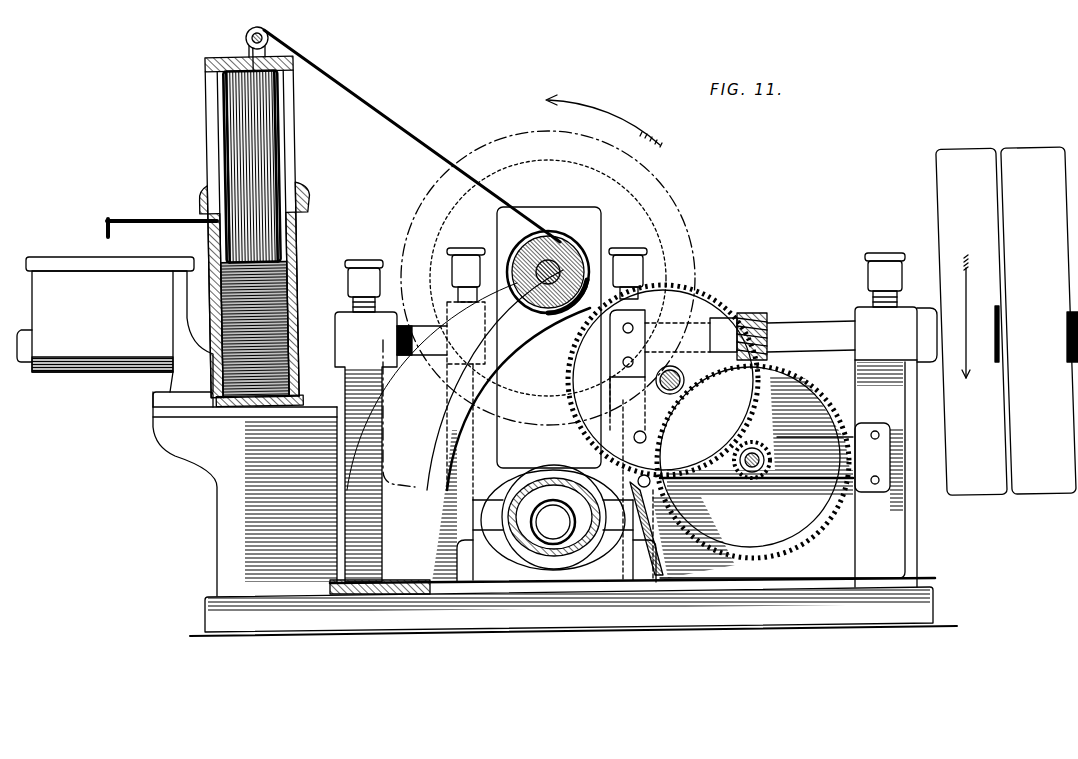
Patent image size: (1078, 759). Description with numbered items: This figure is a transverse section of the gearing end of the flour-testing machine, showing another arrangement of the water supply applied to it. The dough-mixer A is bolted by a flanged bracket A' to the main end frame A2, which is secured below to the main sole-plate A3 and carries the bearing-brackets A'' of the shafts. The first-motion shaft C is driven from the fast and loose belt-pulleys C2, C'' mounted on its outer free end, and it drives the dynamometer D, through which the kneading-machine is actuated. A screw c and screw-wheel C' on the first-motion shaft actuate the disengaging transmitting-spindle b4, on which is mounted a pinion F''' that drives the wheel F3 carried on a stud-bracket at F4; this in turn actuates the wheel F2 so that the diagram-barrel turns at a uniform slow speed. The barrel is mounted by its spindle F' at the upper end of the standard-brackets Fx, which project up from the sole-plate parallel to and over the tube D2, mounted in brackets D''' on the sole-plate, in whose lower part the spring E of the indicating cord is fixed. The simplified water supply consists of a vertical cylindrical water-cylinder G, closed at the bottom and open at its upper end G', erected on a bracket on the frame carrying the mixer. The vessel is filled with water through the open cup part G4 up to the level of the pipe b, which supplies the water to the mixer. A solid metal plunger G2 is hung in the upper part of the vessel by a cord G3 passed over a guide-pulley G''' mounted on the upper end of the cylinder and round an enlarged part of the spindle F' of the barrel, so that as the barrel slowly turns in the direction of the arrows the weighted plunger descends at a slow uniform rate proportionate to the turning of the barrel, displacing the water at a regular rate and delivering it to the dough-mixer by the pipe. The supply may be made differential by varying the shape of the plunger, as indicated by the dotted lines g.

The upper end of the water-cylinder G' is at (247, 227).
The plunger G2 is at (252, 155).
The dotted lines g is at (228, 123).
The water-cylinder G is at (258, 314).
The open cup part G4 is at (300, 190).
The pipe b is at (133, 224).
The pulley G''' is at (247, 35).
The cord G3 is at (283, 50).
The loose belt-pulley C'' is at (644, 328).
The dough-mixer A is at (105, 314).
The flanged bracket A' is at (183, 339).
The main end frame A2 is at (544, 479).
The main sole-plate A3 is at (205, 608).
The bearing-brackets A'' is at (636, 420).
The first-motion shaft C is at (626, 336).
The screw c is at (759, 316).
The dynamometer D is at (547, 353).
The spindle of the barrel F' is at (550, 269).
The standard-brackets Fx is at (468, 380).
The wheel F2 is at (403, 305).
The brackets D''' is at (556, 491).
The tube D2 is at (528, 496).
The spring E is at (553, 522).
The stud-bracket F4 is at (665, 392).
The screw-wheel C' is at (627, 445).
The wheel F3 is at (735, 462).
The disengaging transmitting-spindle b4 is at (750, 470).
The pinion F''' is at (750, 442).
The fast belt-pulley C2 is at (1020, 337).